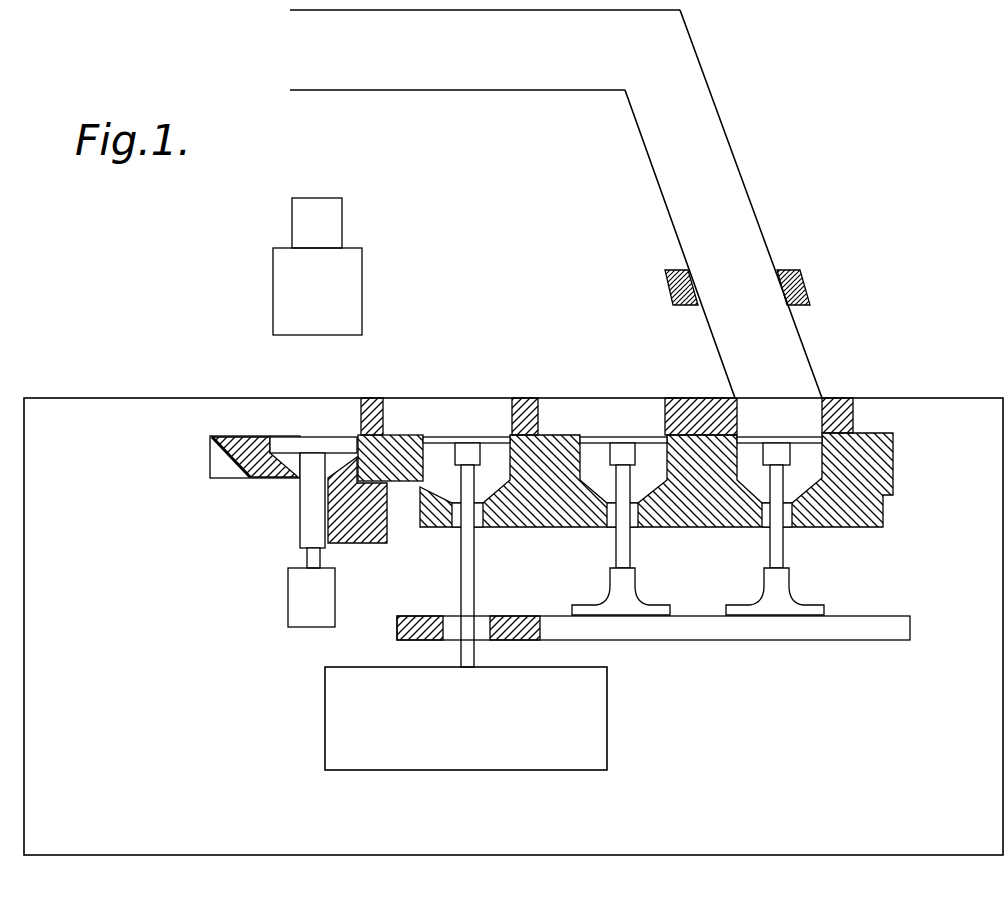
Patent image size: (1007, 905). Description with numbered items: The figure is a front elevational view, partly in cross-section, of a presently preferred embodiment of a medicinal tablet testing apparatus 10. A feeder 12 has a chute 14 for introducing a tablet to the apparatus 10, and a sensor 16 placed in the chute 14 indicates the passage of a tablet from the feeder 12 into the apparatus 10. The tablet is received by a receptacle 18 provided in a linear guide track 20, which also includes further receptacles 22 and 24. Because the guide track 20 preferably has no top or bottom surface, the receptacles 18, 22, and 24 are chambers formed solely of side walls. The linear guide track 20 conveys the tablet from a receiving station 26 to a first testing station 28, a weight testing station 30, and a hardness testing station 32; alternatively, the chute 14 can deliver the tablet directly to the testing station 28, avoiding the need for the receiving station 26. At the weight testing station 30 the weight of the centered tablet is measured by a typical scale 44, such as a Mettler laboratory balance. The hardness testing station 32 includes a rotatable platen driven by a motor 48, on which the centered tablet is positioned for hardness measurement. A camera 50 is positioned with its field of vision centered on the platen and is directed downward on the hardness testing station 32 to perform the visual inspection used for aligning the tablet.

The apparatus 10 is at (872, 223).
The feeder 12 is at (482, 67).
The chute 14 is at (715, 172).
The sensor 16 is at (812, 282).
The receptacle 18 is at (797, 410).
The linear guide track 20 is at (857, 416).
The receptacle 22 is at (632, 417).
The receptacle 24 is at (477, 415).
The receiving station 26 is at (773, 440).
The testing station 28 is at (613, 435).
The weight testing station 30 is at (467, 440).
The hardness testing station 32 is at (311, 452).
The scale 44 is at (490, 742).
The motor 48 is at (303, 592).
The camera 50 is at (278, 275).